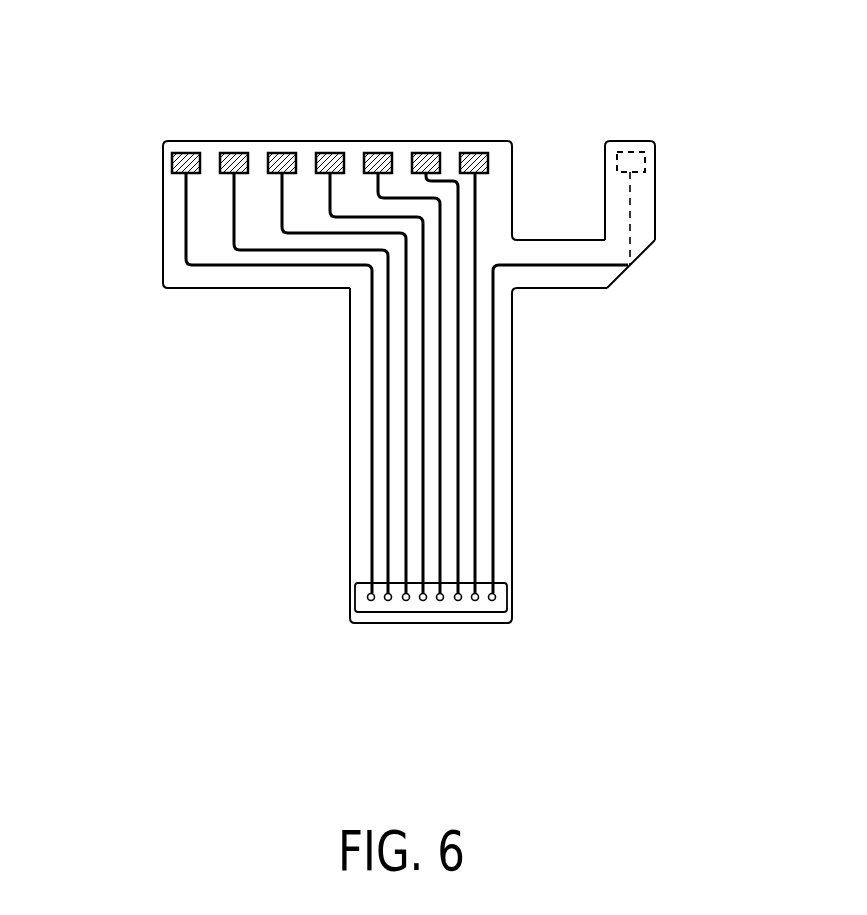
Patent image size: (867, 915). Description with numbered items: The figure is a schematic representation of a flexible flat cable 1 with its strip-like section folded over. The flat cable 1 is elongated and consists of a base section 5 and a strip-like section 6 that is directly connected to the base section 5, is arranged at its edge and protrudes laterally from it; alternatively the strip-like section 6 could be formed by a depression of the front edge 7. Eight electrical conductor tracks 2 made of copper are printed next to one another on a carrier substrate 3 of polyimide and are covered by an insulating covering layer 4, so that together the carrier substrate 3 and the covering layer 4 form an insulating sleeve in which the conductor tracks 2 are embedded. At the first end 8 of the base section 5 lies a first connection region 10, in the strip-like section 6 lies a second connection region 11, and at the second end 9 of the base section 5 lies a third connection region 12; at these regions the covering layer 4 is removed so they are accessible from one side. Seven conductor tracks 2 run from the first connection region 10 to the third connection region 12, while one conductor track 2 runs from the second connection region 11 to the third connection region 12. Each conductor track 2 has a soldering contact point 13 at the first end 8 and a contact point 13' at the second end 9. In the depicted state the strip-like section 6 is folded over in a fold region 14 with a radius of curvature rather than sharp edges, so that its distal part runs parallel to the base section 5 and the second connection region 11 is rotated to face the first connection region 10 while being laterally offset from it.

The flexible flat cable 1 is at (147, 111).
The electrical conductor tracks 2 is at (318, 235).
The carrier substrate 3 is at (513, 191).
The covering layer 4 is at (520, 475).
The base section 5 is at (163, 248).
The strip-like section 6 is at (656, 222).
The front edge 7 is at (348, 140).
The first end 8 is at (449, 129).
The second end 9 is at (355, 638).
The first connection region 10 is at (163, 162).
The second connection region 11 is at (665, 163).
The third connection region 12 is at (515, 597).
The contact point 13 is at (434, 112).
The contact point 13' is at (432, 656).
The fold region 14 is at (633, 262).